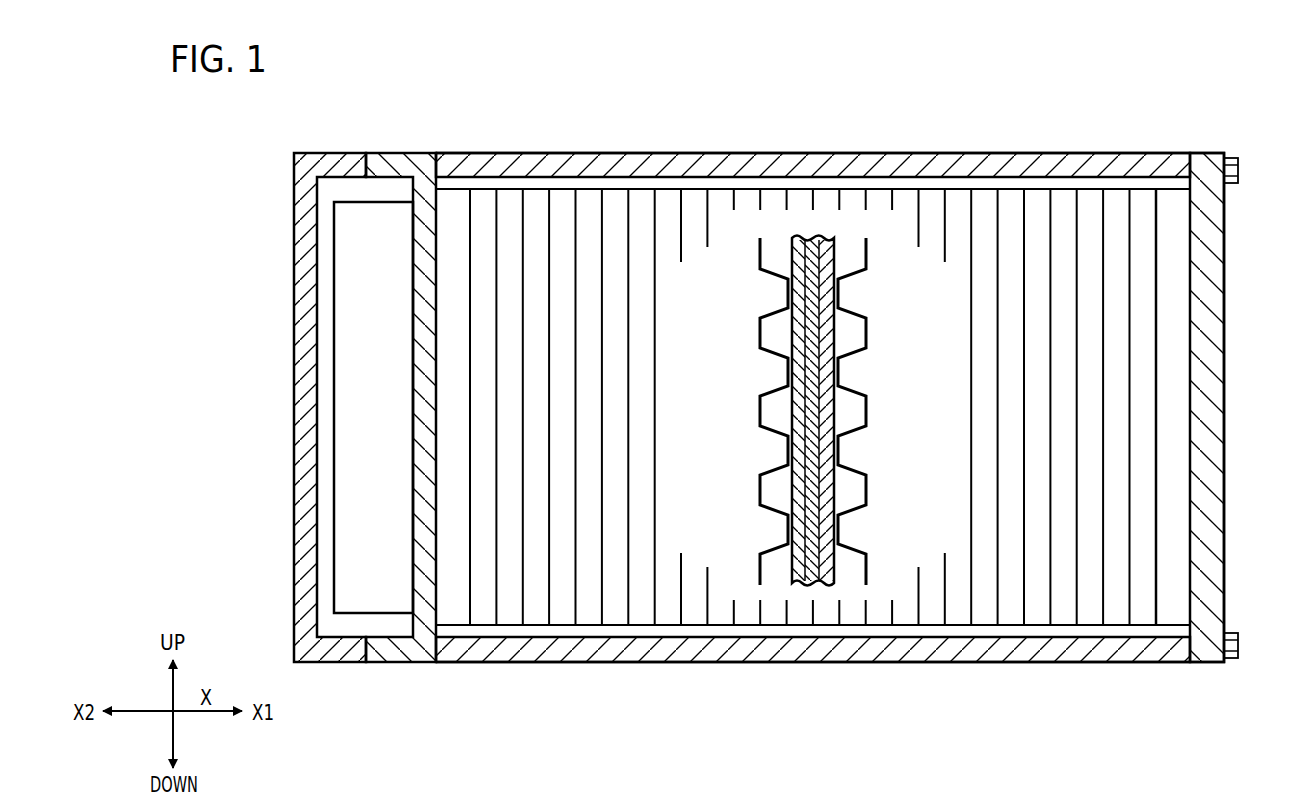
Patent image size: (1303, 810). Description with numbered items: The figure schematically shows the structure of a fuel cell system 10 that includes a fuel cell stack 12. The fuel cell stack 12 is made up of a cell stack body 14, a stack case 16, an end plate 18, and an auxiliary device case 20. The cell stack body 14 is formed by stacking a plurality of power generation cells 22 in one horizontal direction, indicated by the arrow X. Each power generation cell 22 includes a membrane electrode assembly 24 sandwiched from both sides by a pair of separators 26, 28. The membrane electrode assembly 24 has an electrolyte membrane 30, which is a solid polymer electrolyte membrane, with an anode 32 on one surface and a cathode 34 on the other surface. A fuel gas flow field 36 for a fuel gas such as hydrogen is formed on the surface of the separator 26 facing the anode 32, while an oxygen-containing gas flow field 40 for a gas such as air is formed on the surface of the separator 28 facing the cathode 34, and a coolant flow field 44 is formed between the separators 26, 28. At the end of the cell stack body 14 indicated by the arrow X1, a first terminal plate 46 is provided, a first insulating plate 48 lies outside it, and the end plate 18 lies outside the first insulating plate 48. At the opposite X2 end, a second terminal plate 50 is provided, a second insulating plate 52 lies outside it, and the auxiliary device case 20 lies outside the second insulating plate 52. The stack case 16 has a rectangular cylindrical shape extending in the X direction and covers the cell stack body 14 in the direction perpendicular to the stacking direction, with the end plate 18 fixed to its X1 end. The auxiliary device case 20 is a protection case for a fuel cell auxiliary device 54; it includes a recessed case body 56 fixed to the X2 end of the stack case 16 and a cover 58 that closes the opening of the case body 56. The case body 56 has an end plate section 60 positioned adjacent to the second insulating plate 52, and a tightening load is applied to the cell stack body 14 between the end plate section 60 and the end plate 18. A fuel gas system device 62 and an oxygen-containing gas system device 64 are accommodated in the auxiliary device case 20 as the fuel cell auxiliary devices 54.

The fuel cell system 10 is at (1209, 99).
The fuel cell stack 12 is at (1229, 139).
The cell stack body 14 is at (985, 186).
The stack case 16 is at (988, 650).
The end plate 18 is at (1213, 246).
The auxiliary device case 20 is at (297, 147).
The power generation cell 22 is at (1065, 200).
The membrane electrode assembly 24 is at (872, 411).
The separator 26 is at (868, 405).
The separator 28 is at (760, 491).
The electrolyte membrane 30 is at (813, 492).
The anode 32 is at (827, 452).
The cathode 34 is at (917, 432).
The fuel gas flow field 36 is at (850, 335).
The oxygen-containing gas flow field 40 is at (775, 413).
The coolant flow field 44 is at (778, 298).
The first terminal plate 46 is at (1141, 200).
The first insulating plate 48 is at (1172, 200).
The second terminal plate 50 is at (486, 205).
The second insulating plate 52 is at (452, 198).
The fuel cell auxiliary device 54 is at (283, 407).
The case body 56 is at (395, 166).
The cover 58 is at (337, 166).
The end plate section 60 is at (423, 250).
The fuel gas system device 62 is at (373, 407).
The oxygen-containing gas system device 64 is at (345, 292).